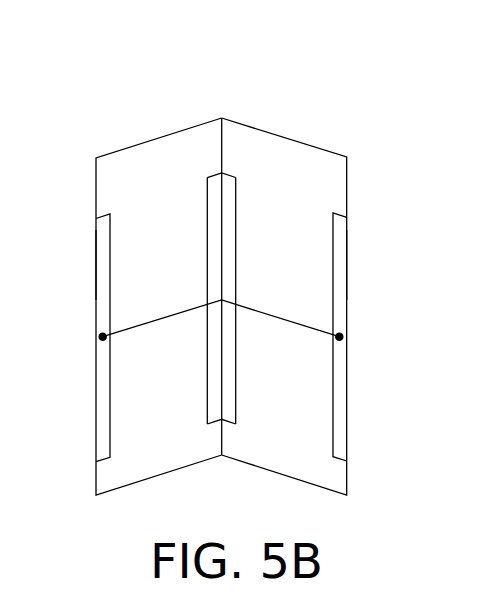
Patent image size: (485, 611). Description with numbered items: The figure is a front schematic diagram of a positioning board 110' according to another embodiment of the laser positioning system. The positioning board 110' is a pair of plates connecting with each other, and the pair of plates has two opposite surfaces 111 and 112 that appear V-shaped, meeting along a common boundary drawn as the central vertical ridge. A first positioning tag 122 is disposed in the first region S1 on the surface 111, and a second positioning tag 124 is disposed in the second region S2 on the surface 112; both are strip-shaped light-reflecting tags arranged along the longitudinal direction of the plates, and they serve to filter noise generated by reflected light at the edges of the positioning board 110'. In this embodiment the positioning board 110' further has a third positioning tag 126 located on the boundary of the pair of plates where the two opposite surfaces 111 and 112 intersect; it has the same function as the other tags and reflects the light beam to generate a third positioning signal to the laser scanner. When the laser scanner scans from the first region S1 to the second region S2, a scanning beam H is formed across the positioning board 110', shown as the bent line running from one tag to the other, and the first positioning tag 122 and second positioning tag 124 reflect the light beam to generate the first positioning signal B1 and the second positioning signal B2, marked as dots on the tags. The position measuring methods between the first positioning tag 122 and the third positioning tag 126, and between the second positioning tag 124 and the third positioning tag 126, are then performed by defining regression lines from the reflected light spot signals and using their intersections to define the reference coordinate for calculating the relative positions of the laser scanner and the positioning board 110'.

The positioning board 110' is at (126, 235).
The opposite surface 111 is at (160, 137).
The opposite surface 112 is at (284, 135).
The third positioning tag 126 is at (228, 185).
The first positioning tag 122 is at (101, 291).
The second positioning tag 124 is at (338, 293).
The first region S1 is at (91, 264).
The second region S2 is at (358, 259).
The first positioning signal B1 is at (85, 337).
The second positioning signal B2 is at (359, 337).
The scanning beam H is at (279, 319).